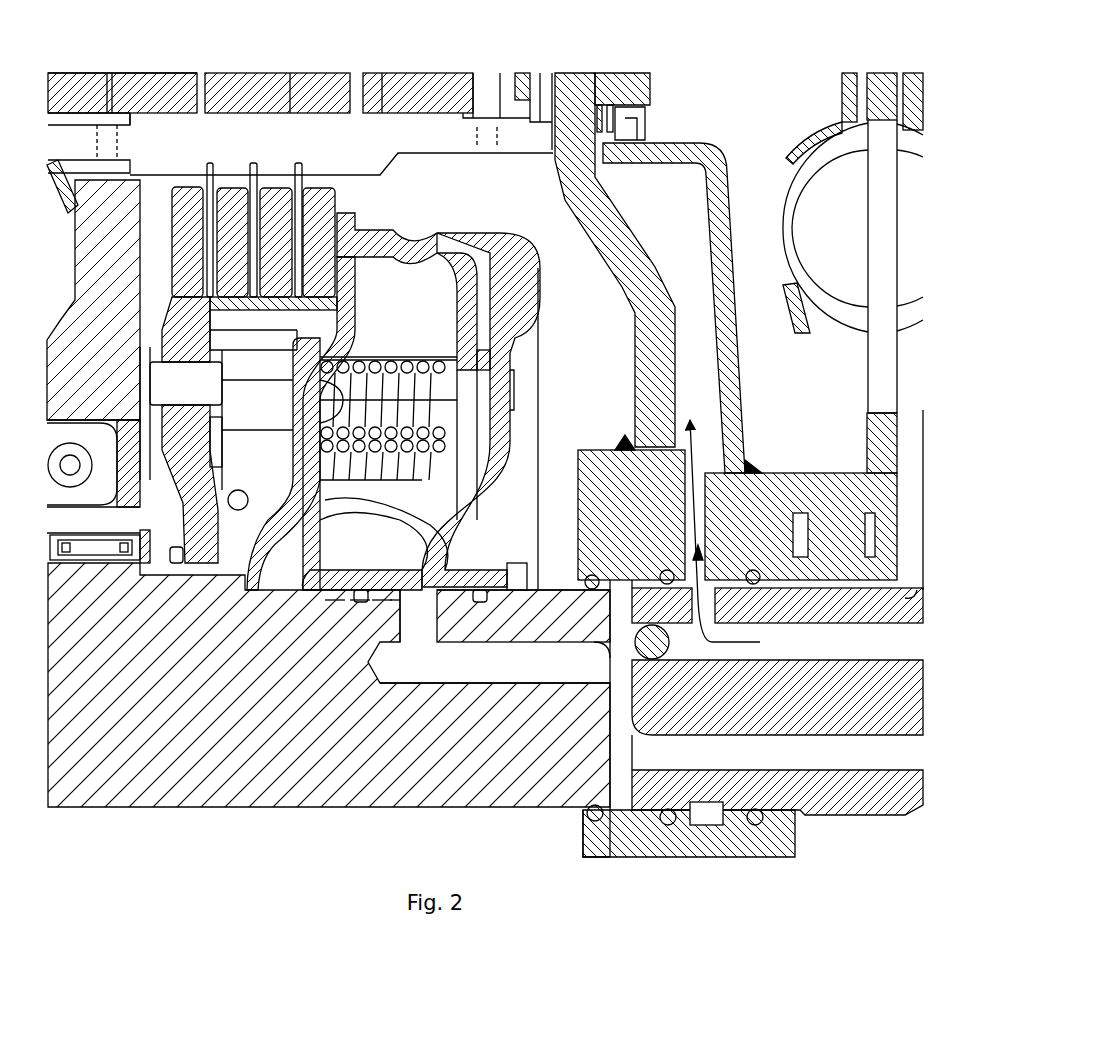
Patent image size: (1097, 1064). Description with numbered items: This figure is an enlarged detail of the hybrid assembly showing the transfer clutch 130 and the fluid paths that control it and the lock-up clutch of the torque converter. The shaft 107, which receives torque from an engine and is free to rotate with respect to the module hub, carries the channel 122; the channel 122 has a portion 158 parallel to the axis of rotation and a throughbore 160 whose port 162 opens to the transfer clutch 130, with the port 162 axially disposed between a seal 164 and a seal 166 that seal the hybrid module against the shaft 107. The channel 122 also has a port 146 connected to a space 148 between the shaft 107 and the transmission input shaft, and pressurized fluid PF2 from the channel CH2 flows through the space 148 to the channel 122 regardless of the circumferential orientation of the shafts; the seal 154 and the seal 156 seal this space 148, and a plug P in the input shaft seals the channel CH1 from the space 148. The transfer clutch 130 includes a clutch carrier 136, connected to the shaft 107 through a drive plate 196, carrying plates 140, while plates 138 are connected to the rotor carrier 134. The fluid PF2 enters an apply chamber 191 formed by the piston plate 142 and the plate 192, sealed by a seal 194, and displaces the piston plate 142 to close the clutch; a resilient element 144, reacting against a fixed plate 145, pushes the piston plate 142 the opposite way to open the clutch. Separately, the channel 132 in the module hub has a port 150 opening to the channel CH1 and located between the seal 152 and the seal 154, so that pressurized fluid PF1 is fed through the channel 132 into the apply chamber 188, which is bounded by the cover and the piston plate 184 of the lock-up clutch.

The shaft 107 is at (90, 815).
The channel 122 is at (462, 690).
The transfer clutch 130 is at (407, 220).
The channel 132 is at (715, 510).
The rotor carrier 134 is at (147, 130).
The clutch carrier 136 is at (187, 297).
The plate 138 is at (207, 180).
The plate 140 is at (230, 180).
The piston plate 142 is at (355, 240).
The resilient element 144 is at (393, 240).
The fixed plate 145 is at (187, 562).
The port 146 is at (597, 673).
The space 148 is at (618, 840).
The port 150 is at (872, 557).
The seal 152 is at (753, 833).
The seal 154 is at (668, 833).
The seal 156 is at (585, 853).
The portion 158 is at (513, 686).
The throughbore 160 is at (398, 603).
The port 162 is at (382, 603).
The seal 164 is at (392, 545).
The seal 166 is at (360, 603).
The piston plate 184 is at (633, 85).
The apply chamber 188 is at (660, 177).
The apply chamber 191 is at (335, 603).
The plate 192 is at (520, 297).
The seal 194 is at (433, 233).
The drive plate 196 is at (187, 193).
The plug P is at (575, 478).
The channel CH1 is at (825, 638).
The channel CH2 is at (825, 748).
The pressurized fluid PF1 is at (905, 598).
The pressurized fluid PF2 is at (718, 757).